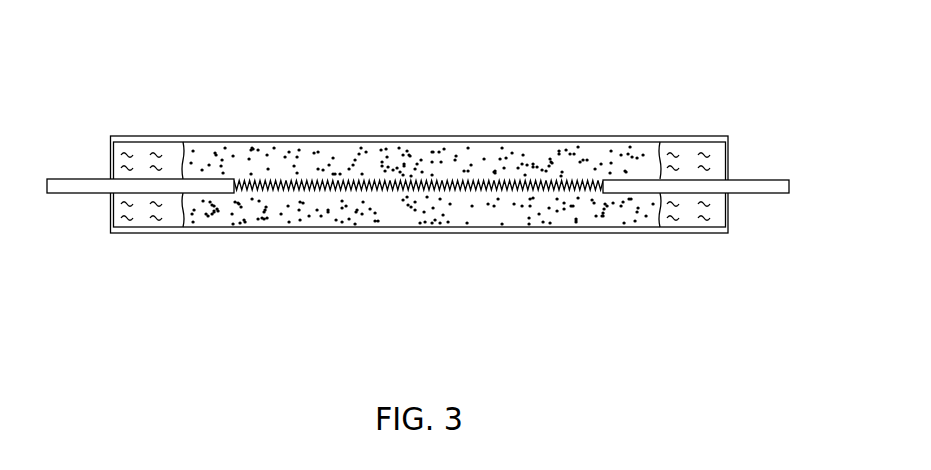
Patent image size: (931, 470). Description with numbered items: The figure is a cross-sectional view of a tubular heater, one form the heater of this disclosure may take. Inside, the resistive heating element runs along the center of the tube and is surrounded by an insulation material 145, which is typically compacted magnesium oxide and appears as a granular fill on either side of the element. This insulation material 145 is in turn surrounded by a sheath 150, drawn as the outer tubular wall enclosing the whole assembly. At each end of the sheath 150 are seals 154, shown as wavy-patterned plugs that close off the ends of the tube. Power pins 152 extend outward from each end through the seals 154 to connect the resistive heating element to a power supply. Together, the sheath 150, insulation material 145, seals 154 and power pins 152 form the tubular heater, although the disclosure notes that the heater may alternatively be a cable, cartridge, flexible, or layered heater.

The insulation material 145 is at (390, 220).
The sheath 150 is at (500, 232).
The power pins 152 is at (749, 193).
The seals 154 is at (140, 215).